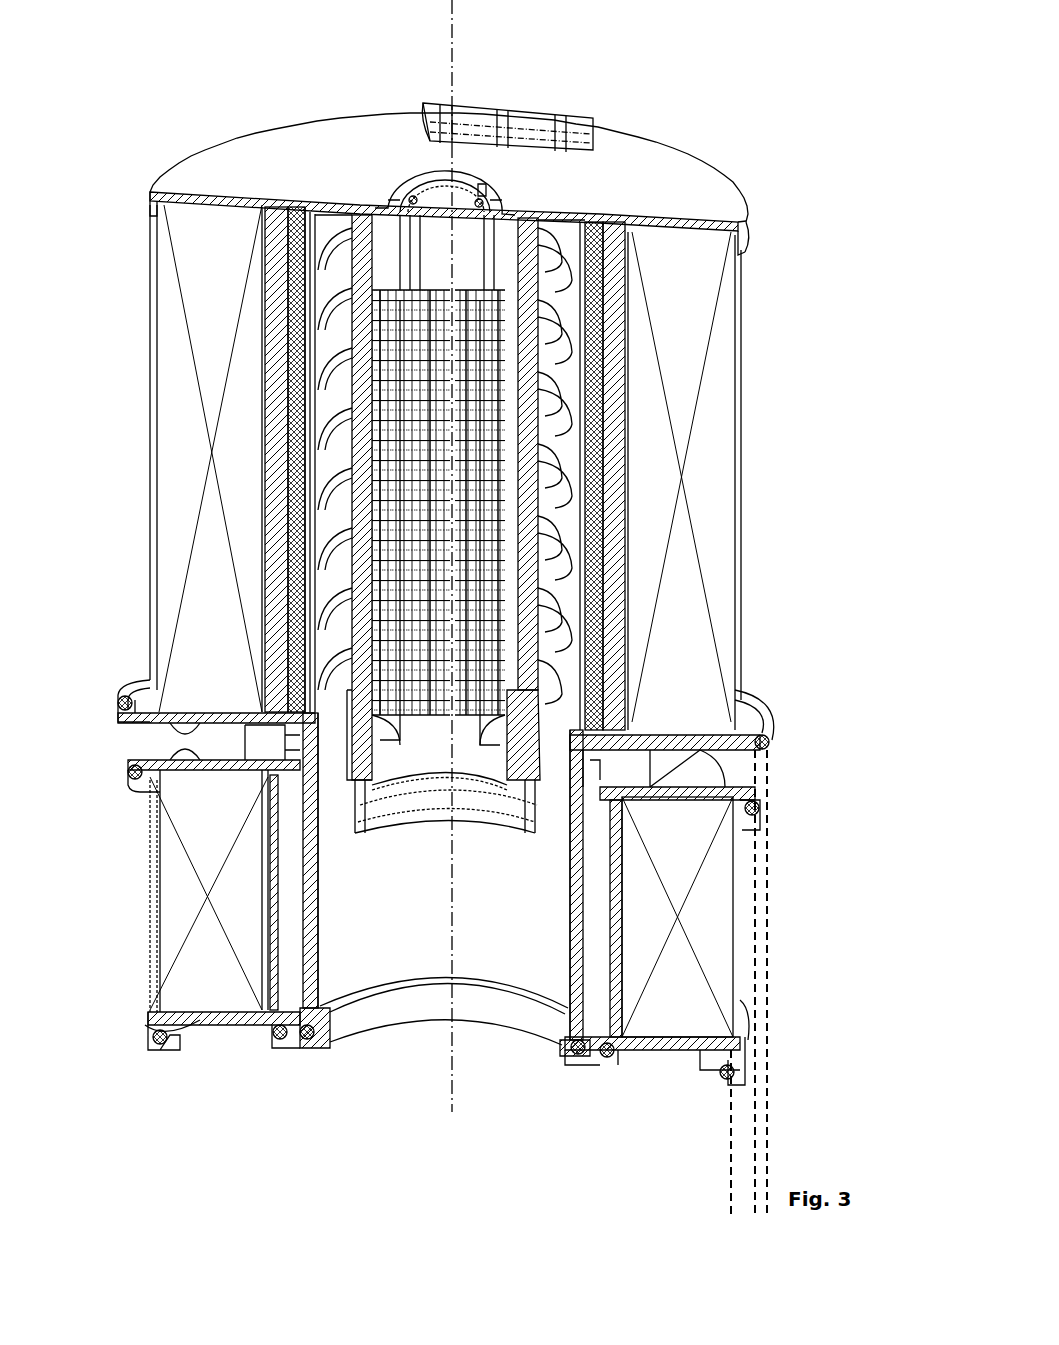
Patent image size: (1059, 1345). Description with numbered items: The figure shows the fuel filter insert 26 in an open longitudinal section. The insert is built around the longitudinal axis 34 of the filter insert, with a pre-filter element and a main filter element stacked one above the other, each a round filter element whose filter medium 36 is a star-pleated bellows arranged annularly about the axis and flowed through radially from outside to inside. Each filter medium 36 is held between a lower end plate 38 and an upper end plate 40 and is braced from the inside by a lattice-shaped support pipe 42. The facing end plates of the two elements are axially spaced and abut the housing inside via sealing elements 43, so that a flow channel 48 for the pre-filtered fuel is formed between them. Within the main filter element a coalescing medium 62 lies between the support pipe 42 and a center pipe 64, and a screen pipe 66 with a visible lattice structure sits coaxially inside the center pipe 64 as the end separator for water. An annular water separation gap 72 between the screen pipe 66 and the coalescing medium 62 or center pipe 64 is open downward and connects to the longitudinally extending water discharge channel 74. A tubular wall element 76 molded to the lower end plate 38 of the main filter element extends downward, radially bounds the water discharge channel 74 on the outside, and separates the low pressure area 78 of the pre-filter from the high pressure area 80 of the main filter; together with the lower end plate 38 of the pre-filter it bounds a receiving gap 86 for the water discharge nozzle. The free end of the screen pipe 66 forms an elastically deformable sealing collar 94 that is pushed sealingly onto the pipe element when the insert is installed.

The fuel filter insert 26 is at (733, 70).
The longitudinal axis of the filter insert 34 is at (458, 70).
The filter medium 36 is at (686, 342).
The lower end plate 38 is at (690, 1052).
The upper end plate 40 is at (598, 188).
The support pipe 42 is at (282, 390).
The sealing element 43 is at (768, 748).
The flow channel 48 is at (702, 768).
The coalescing medium 62 is at (300, 458).
The center pipe 64 is at (312, 482).
The screen pipe 66 is at (362, 524).
The water separation gap 72 is at (335, 340).
The water discharge channel 74 is at (335, 822).
The wall element 76 is at (313, 895).
The low pressure area 78 is at (297, 833).
The high pressure area 80 is at (415, 620).
The receiving gap 86 is at (294, 1045).
The sealing collar 94 is at (375, 805).